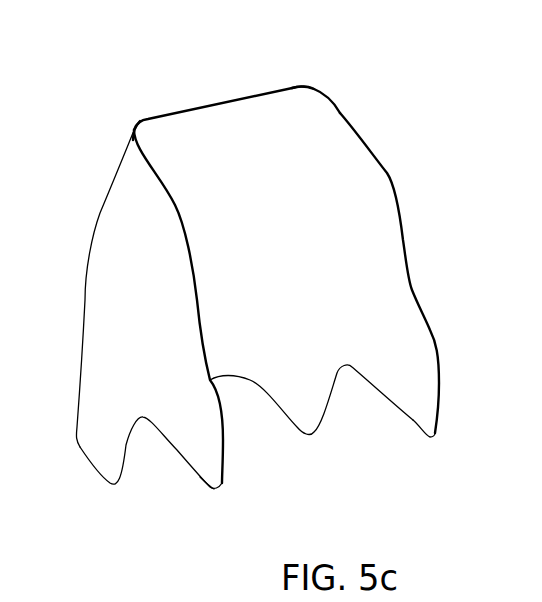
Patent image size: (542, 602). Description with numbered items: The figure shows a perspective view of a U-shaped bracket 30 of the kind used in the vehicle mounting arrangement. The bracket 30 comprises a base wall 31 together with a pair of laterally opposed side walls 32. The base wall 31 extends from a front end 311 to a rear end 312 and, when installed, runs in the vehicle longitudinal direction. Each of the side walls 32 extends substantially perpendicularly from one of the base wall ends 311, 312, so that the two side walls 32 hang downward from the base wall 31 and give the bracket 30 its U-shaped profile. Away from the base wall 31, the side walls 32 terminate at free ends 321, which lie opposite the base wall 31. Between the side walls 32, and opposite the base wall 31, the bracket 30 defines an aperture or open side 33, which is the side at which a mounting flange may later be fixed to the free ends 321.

The U-shaped bracket 30 is at (423, 151).
The base wall 31 is at (195, 127).
The front end 311 is at (119, 122).
The rear end 312 is at (307, 74).
The side walls 32 is at (93, 437).
The free ends 321 is at (187, 487).
The aperture/open side 33 is at (340, 464).